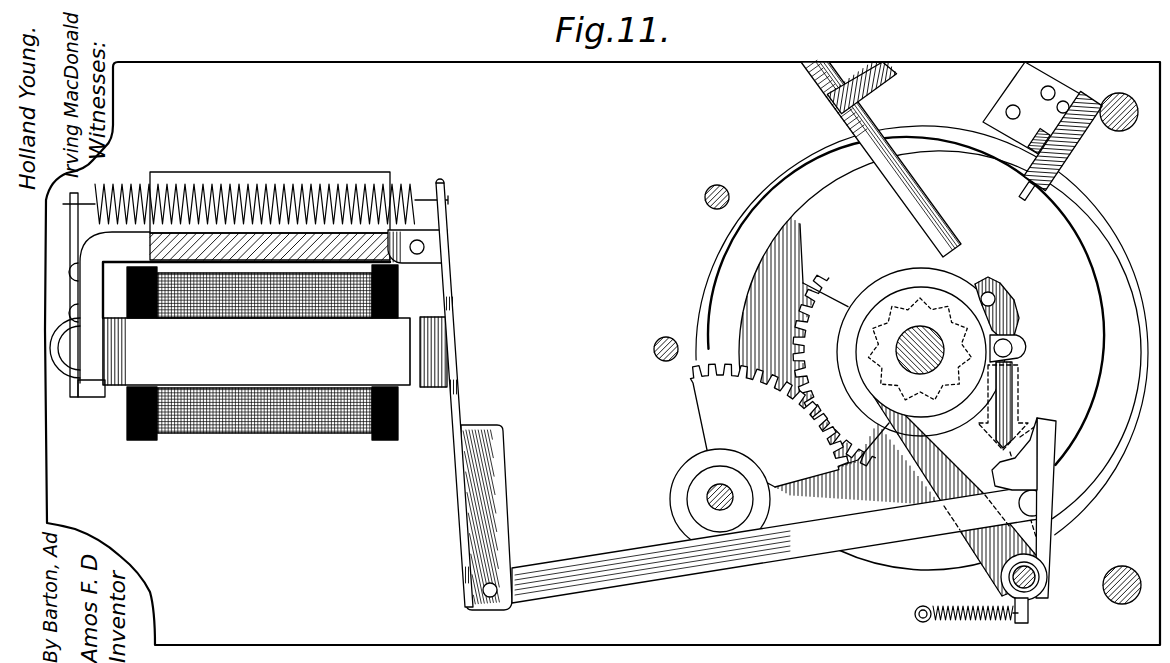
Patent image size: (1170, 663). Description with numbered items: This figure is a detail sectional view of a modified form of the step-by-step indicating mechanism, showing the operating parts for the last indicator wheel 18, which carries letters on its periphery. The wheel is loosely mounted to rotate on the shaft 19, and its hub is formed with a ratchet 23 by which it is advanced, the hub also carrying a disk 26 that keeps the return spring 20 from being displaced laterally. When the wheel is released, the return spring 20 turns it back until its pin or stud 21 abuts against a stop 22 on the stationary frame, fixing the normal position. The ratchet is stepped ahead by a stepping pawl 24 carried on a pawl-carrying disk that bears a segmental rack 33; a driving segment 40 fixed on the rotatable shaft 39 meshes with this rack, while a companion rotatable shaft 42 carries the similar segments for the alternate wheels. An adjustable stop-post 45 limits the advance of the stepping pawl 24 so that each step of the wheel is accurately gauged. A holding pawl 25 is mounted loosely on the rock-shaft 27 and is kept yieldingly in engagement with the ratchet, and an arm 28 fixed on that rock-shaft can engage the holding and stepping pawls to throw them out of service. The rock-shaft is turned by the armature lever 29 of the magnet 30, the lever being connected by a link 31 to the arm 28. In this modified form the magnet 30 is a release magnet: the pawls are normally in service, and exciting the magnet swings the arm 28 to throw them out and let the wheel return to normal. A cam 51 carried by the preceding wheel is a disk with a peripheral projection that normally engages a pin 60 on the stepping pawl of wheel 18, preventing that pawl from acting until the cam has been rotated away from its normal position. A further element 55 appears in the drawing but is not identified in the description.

The indicator wheel 18 is at (878, 562).
The shaft 19 is at (919, 340).
The return spring 20 is at (930, 150).
The pin or stud 21 is at (1032, 108).
The stop 22 is at (1076, 142).
The ratchet 23 is at (920, 349).
The stepping pawl 24 is at (1016, 311).
The holding pawl 25 is at (922, 476).
The disk 26 is at (908, 350).
The rock-shaft 27 is at (1034, 574).
The arm 28 is at (1047, 540).
The armature lever 29 is at (498, 486).
The release magnet 30 is at (247, 312).
The link 31 is at (780, 544).
The segmental rack 33 is at (857, 370).
The rotatable shaft 39 is at (707, 497).
The driving segment 40 is at (759, 456).
The rotatable shaft 42 is at (705, 194).
The adjustable stop-post 45 is at (946, 241).
The cam 51 is at (940, 403).
The post 55 is at (654, 349).
The pin 60 is at (993, 300).